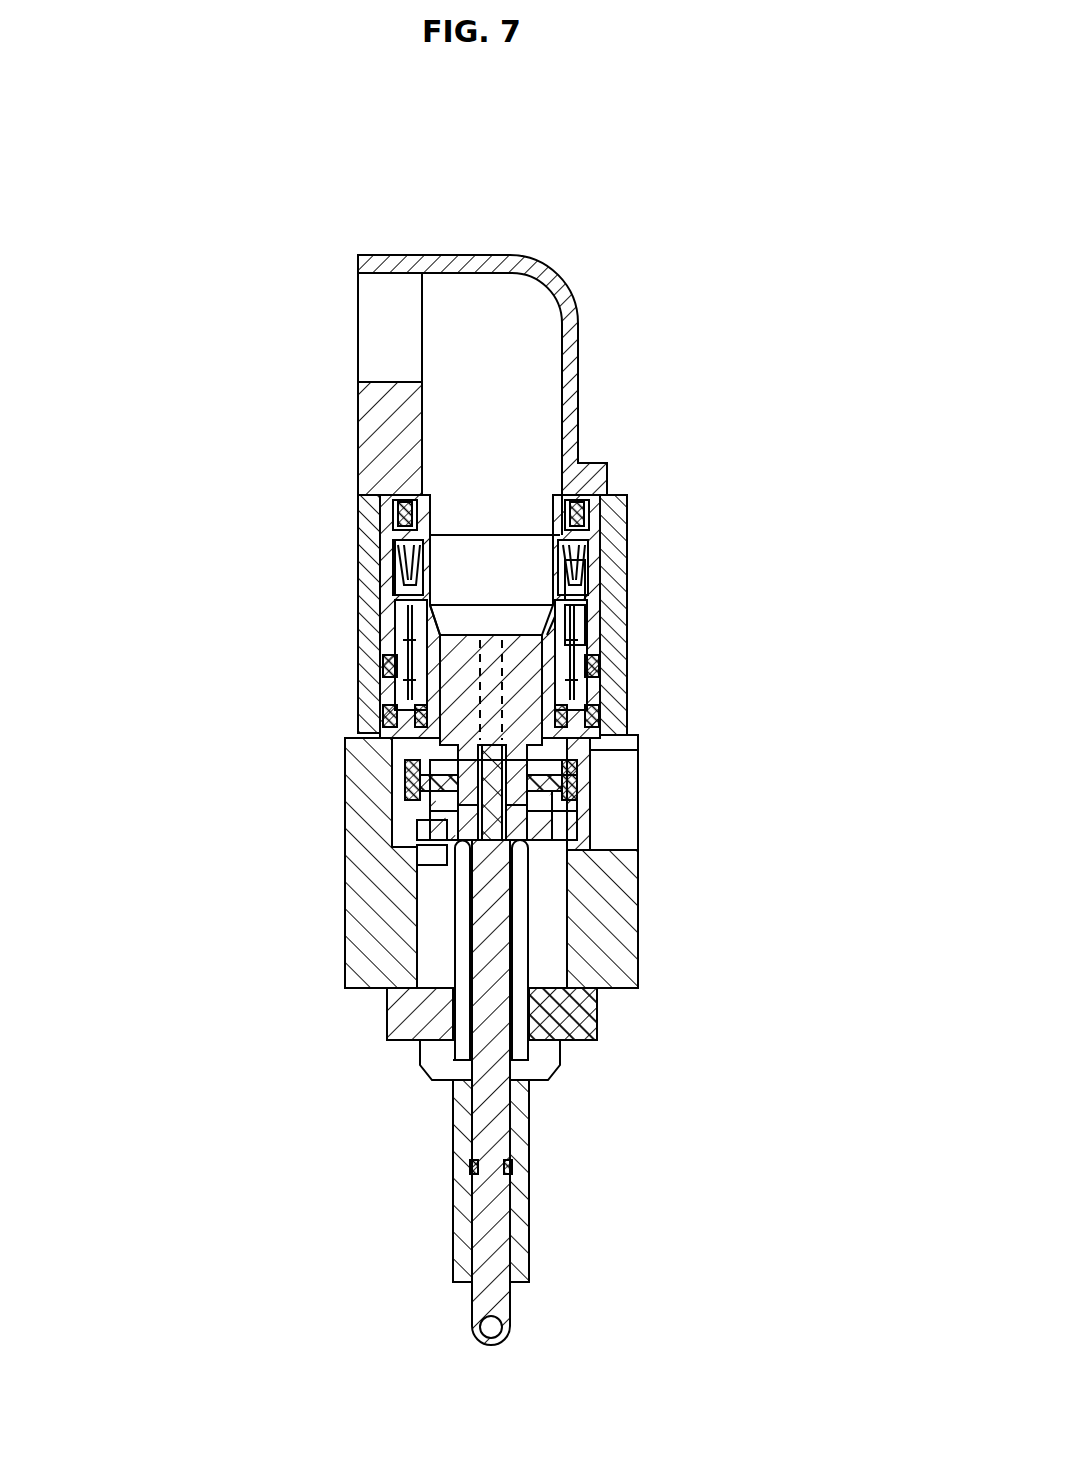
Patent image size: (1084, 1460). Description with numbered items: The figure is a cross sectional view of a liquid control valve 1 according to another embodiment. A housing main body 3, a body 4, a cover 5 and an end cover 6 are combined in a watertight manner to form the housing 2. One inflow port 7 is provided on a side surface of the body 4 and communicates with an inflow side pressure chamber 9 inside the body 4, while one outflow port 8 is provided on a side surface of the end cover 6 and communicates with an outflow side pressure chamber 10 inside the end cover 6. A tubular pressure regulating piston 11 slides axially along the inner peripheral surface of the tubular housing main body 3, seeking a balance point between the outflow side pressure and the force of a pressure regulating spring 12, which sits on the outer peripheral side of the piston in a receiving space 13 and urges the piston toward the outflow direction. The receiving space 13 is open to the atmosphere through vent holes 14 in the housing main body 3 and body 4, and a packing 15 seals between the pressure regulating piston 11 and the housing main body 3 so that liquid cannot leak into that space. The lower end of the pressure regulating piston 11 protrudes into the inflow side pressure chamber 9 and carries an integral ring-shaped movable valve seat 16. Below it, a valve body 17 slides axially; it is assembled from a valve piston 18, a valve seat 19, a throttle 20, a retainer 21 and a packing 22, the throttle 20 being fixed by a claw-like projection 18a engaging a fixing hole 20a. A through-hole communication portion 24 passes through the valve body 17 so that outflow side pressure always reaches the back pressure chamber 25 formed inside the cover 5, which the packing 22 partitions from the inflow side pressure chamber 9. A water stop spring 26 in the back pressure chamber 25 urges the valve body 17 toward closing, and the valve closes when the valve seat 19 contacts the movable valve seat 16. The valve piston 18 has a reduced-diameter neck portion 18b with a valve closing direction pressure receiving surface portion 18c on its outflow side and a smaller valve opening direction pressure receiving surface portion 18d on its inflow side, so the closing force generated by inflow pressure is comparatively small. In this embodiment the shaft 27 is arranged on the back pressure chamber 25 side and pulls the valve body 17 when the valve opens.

The liquid control valve 1 is at (483, 759).
The housing 2 is at (457, 453).
The housing main body 3 is at (392, 572).
The body 4 is at (352, 990).
The cover 5 is at (387, 1042).
The end cover 6 is at (468, 262).
The inflow port 7 is at (617, 822).
The outflow port 8 is at (378, 330).
The inflow side pressure chamber 9 is at (385, 848).
The outflow side pressure chamber 10 is at (530, 394).
The pressure regulating piston 11 is at (570, 597).
The pressure regulating spring 12 is at (570, 630).
The receiving space 13 is at (398, 618).
The vent holes 14 is at (362, 680).
The packing 15 is at (395, 540).
The movable valve seat 16 is at (634, 744).
The valve body 17 is at (582, 795).
The valve piston 18 is at (572, 882).
The claw-like projection 18a is at (413, 765).
The neck portion 18b is at (420, 835).
The valve closing direction pressure receiving surface portion 18c is at (420, 800).
The valve opening direction pressure receiving surface portion 18d is at (420, 862).
The valve seat 19 is at (655, 773).
The throttle 20 is at (385, 728).
The fixing hole 20a is at (395, 768).
The retainer 21 is at (592, 714).
The packing 22 is at (590, 900).
The communication portion 24 is at (570, 810).
The back pressure chamber 25 is at (562, 1038).
The water stop spring 26 is at (515, 998).
The shaft 27 is at (513, 1120).